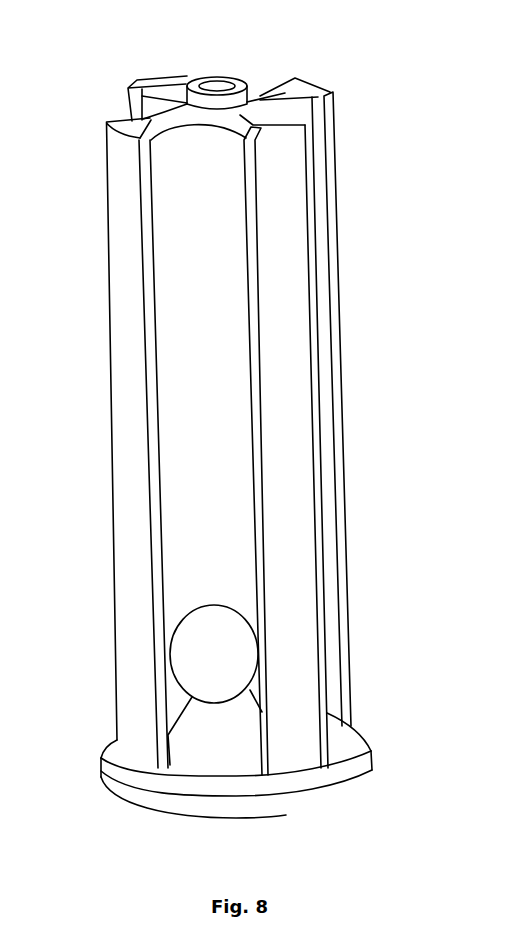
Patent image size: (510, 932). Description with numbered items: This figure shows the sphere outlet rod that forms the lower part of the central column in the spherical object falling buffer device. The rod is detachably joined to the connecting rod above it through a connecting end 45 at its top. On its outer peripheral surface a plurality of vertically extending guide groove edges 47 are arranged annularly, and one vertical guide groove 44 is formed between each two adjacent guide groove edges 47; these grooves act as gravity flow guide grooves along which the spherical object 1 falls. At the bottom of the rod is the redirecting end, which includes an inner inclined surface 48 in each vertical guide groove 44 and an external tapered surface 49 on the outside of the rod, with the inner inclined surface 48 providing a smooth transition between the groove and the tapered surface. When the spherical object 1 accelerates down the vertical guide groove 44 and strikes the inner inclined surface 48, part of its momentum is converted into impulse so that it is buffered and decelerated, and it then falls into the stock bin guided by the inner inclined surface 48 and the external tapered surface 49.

The spherical object 1 is at (200, 657).
The vertical guide groove 44 is at (192, 516).
The connecting end 45 is at (233, 108).
The guide groove edge 47 is at (283, 544).
The inner inclined surface 48 is at (188, 728).
The external tapered surface 49 is at (142, 774).